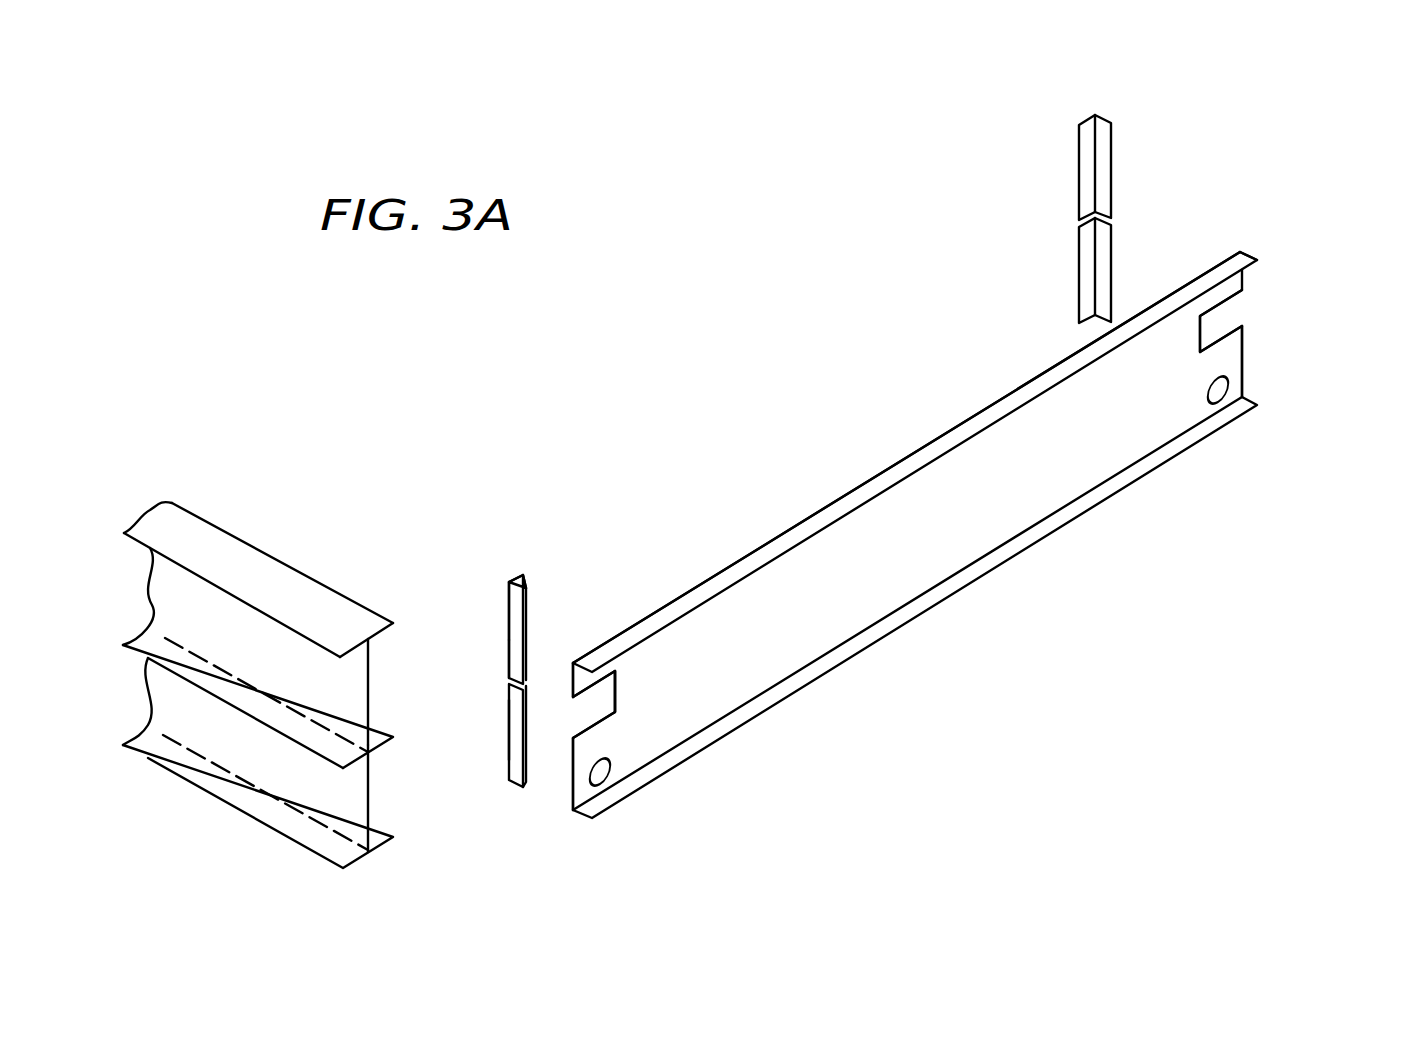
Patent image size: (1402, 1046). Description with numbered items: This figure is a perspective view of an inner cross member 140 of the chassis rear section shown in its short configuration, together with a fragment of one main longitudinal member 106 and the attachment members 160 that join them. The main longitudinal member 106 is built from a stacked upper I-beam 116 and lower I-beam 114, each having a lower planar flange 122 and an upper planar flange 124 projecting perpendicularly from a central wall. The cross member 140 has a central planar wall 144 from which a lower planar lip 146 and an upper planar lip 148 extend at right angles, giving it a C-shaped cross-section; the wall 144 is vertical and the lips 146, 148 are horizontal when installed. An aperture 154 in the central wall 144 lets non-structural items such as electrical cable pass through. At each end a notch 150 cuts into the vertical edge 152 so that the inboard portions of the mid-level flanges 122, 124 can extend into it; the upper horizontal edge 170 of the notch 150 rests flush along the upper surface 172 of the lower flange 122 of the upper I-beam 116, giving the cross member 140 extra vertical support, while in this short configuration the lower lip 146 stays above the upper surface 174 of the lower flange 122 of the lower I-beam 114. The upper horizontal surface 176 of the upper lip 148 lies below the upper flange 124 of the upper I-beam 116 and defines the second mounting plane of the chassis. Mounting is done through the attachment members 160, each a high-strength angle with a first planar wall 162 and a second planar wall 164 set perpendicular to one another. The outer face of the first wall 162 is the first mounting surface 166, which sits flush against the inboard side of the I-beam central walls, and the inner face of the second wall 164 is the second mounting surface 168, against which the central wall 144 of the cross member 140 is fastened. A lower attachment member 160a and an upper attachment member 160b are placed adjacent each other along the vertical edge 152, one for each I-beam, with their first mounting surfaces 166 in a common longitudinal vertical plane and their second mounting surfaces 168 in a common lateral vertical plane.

The main longitudinal member 106 is at (195, 542).
The upper I-beam 116 is at (332, 600).
The lower I-beam 114 is at (317, 788).
The lower planar flange 122 is at (385, 734).
The upper planar flange 124 is at (378, 748).
The upper surface of the lower flange of the upper I-beam 172 is at (372, 731).
The upper surface of the lower flange of the lower I-beam 174 is at (380, 833).
The cross member 140 is at (949, 530).
The central planar wall 144 is at (997, 517).
The lower planar lip 146 is at (997, 568).
The upper planar lip 148 is at (1060, 372).
The upper horizontal surface of the upper lip 176 is at (863, 493).
The notch 150 is at (577, 717).
The vertical edge 152 is at (573, 770).
The aperture 154 is at (600, 777).
The upper horizontal edge of the slot 170 is at (575, 662).
The attachment member 160 is at (499, 681).
The lower attachment member 160a is at (510, 763).
The upper attachment member 160b is at (510, 623).
The first planar wall 162 is at (515, 600).
The second planar wall 164 is at (513, 580).
The first mounting surface 166 is at (515, 647).
The second mounting surface 168 is at (1087, 127).